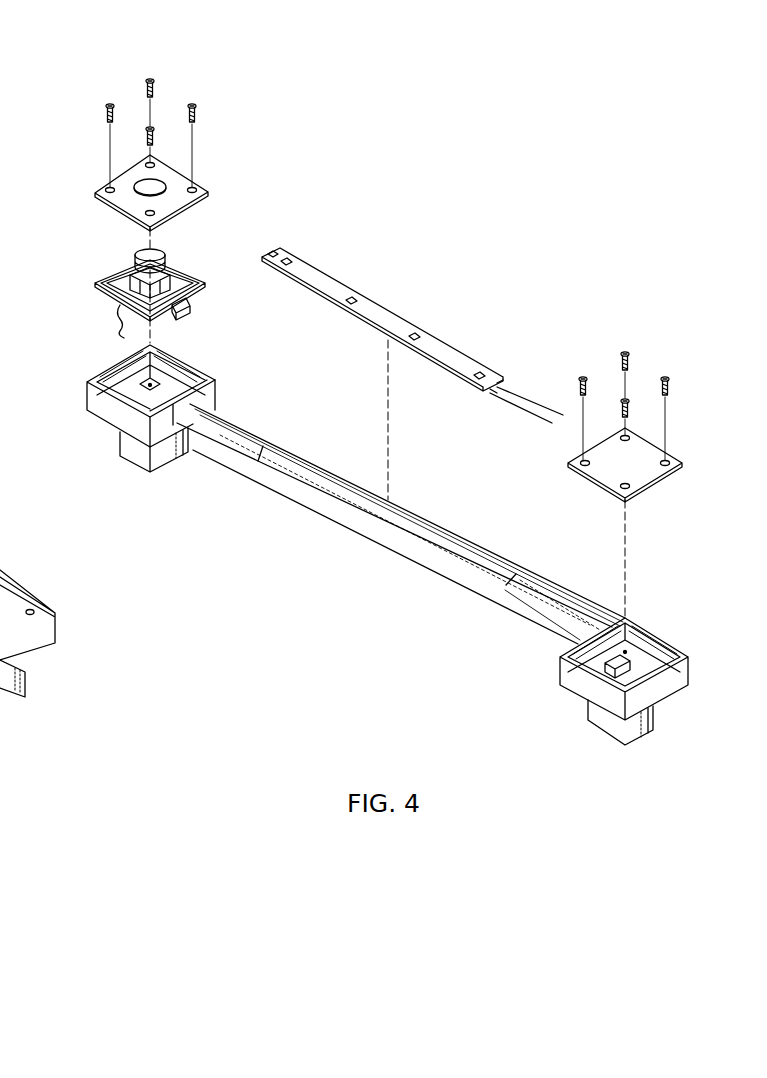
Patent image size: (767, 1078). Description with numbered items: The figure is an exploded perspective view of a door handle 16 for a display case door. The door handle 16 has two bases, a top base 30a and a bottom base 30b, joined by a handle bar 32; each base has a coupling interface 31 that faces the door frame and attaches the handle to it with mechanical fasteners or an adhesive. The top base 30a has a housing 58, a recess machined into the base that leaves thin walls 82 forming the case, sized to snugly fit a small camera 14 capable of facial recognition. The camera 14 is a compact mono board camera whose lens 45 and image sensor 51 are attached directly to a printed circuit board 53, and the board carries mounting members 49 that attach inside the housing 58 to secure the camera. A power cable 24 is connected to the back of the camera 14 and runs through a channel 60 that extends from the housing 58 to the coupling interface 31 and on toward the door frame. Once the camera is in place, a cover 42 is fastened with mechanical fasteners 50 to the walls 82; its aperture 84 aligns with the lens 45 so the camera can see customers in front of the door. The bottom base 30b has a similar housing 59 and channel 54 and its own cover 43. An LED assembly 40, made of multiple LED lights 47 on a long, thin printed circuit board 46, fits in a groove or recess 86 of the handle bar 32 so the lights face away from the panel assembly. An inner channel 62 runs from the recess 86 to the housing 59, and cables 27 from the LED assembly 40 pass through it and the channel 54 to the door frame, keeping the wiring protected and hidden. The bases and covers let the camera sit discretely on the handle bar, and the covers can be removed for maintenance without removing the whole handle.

The door handle 16 is at (593, 158).
The camera 14 is at (143, 287).
The aperture 84 is at (140, 177).
The cover 42 is at (163, 173).
The mechanical fasteners 50 is at (198, 110).
The lens 45 is at (155, 253).
The printed circuit board 53 is at (172, 290).
The image sensor 51 is at (100, 295).
The power cable 24 is at (122, 323).
The mounting members 49 is at (193, 305).
The housing 58 is at (146, 360).
The channel 60 is at (185, 397).
The walls 82 is at (92, 397).
The top base 30a is at (151, 394).
The coupling interface 31 is at (153, 470).
The recess 86 is at (292, 463).
The handle bar 32 is at (401, 524).
The inner channel 62 is at (540, 600).
The LED assembly 40 is at (413, 318).
The printed circuit board 46 is at (318, 280).
The LED lights 47 is at (413, 335).
The cables 27 is at (525, 387).
The cover 43 is at (633, 448).
The housing 59 is at (618, 637).
The channel 54 is at (626, 666).
The bottom base 30b is at (621, 675).